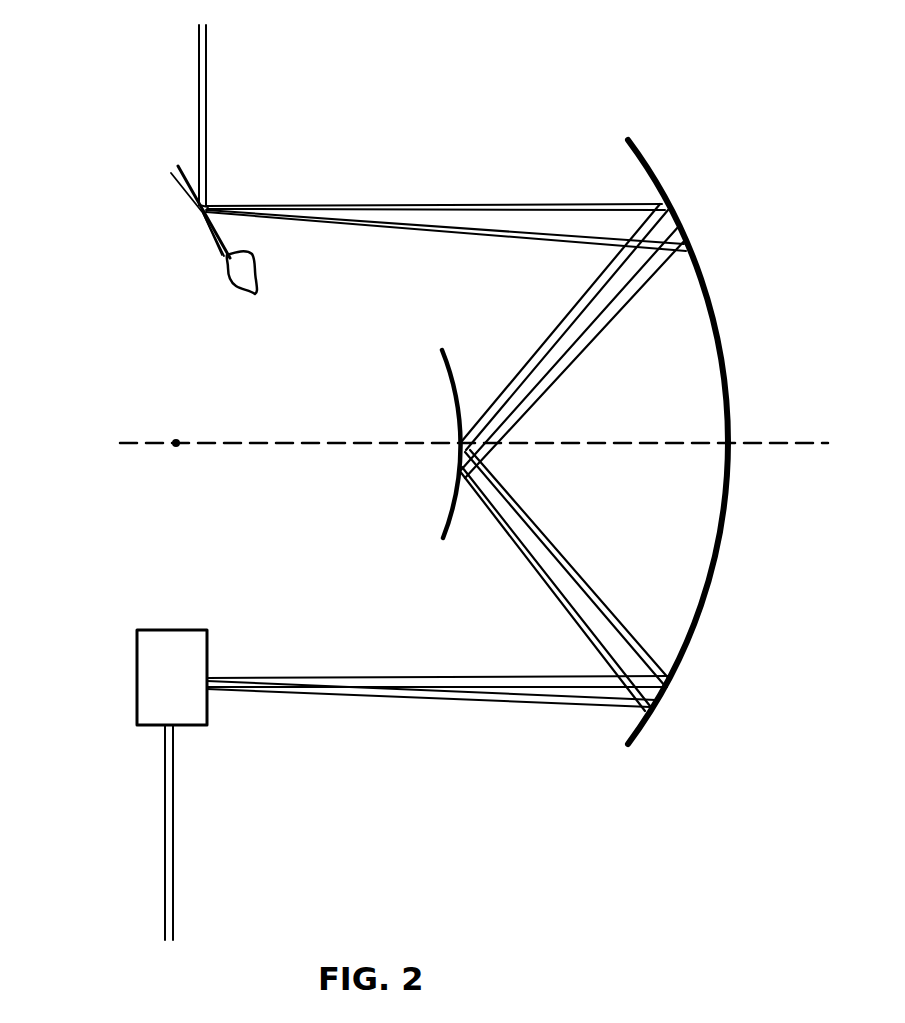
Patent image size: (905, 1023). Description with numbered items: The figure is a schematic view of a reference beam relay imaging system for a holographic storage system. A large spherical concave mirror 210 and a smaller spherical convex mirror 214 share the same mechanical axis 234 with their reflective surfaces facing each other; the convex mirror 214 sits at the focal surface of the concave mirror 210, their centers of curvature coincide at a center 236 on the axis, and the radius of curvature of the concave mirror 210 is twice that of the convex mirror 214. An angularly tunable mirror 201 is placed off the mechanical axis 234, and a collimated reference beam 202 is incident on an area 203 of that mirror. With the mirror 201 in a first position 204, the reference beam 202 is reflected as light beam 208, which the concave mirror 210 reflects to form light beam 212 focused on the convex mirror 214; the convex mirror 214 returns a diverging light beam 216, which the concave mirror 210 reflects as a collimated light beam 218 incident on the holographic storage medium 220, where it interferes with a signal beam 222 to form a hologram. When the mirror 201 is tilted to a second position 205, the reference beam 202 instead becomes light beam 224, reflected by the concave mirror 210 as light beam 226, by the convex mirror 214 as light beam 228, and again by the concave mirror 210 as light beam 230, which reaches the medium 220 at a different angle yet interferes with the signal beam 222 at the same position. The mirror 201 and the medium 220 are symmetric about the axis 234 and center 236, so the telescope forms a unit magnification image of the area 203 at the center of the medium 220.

The angularly tunable mirror 201 is at (264, 290).
The reference beam 202 is at (198, 57).
The area 203 is at (210, 206).
The first position 204 is at (175, 185).
The second position 205 is at (212, 258).
The light beam 208 is at (453, 204).
The concave mirror 210 is at (720, 553).
The light beam 212 is at (572, 300).
The convex mirror 214 is at (445, 512).
The light beam 216 is at (583, 574).
The light beam 218 is at (400, 676).
The holographic storage medium 220 is at (136, 650).
The signal beam 222 is at (176, 832).
The light beam 224 is at (440, 236).
The light beam 226 is at (612, 322).
The light beam 228 is at (554, 592).
The light beam 230 is at (518, 702).
The mechanical axis 234 is at (776, 441).
The center 236 is at (177, 441).